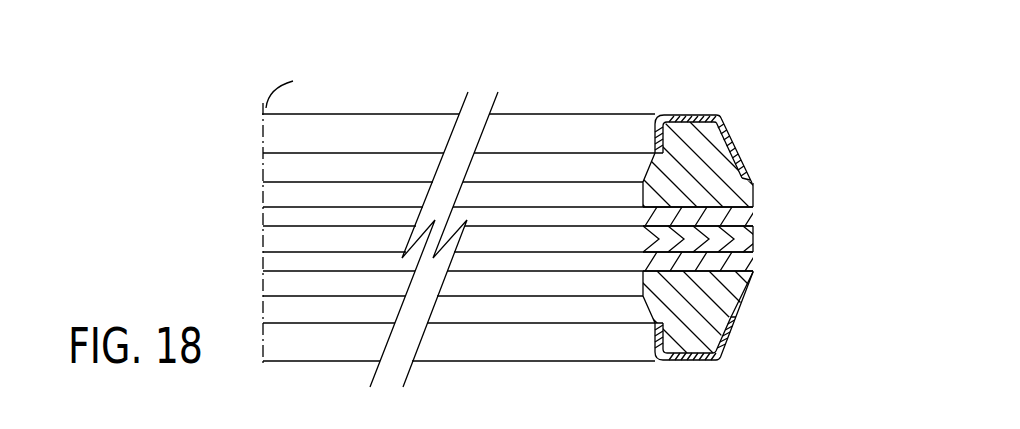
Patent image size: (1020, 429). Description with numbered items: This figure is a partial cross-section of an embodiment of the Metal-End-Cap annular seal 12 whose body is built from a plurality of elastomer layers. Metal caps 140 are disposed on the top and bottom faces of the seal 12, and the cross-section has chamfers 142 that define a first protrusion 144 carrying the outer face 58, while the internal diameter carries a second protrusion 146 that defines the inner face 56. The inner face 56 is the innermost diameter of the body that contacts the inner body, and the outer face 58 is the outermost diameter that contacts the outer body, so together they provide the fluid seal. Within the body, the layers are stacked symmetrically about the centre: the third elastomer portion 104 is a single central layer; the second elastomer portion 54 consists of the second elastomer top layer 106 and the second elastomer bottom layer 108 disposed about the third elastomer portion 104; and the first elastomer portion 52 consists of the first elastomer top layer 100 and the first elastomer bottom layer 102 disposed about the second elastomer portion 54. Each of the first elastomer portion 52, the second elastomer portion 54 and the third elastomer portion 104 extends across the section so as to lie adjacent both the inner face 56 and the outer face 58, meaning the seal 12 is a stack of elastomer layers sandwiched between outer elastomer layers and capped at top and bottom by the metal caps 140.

The annular seal 12 is at (772, 62).
The first elastomer portion 52 is at (716, 241).
The first elastomer top layer 100 is at (746, 190).
The first elastomer bottom layer 102 is at (738, 319).
The second elastomer portion 54 is at (758, 241).
The second elastomer top layer 106 is at (748, 217).
The second elastomer bottom layer 108 is at (748, 264).
The third elastomer portion 104 is at (750, 242).
The inner face 56 is at (642, 284).
The outer face 58 is at (750, 283).
The metal caps 140 is at (719, 114).
The chamfers 142 is at (744, 156).
The first protrusion 144 is at (751, 168).
The second protrusion 146 is at (640, 173).